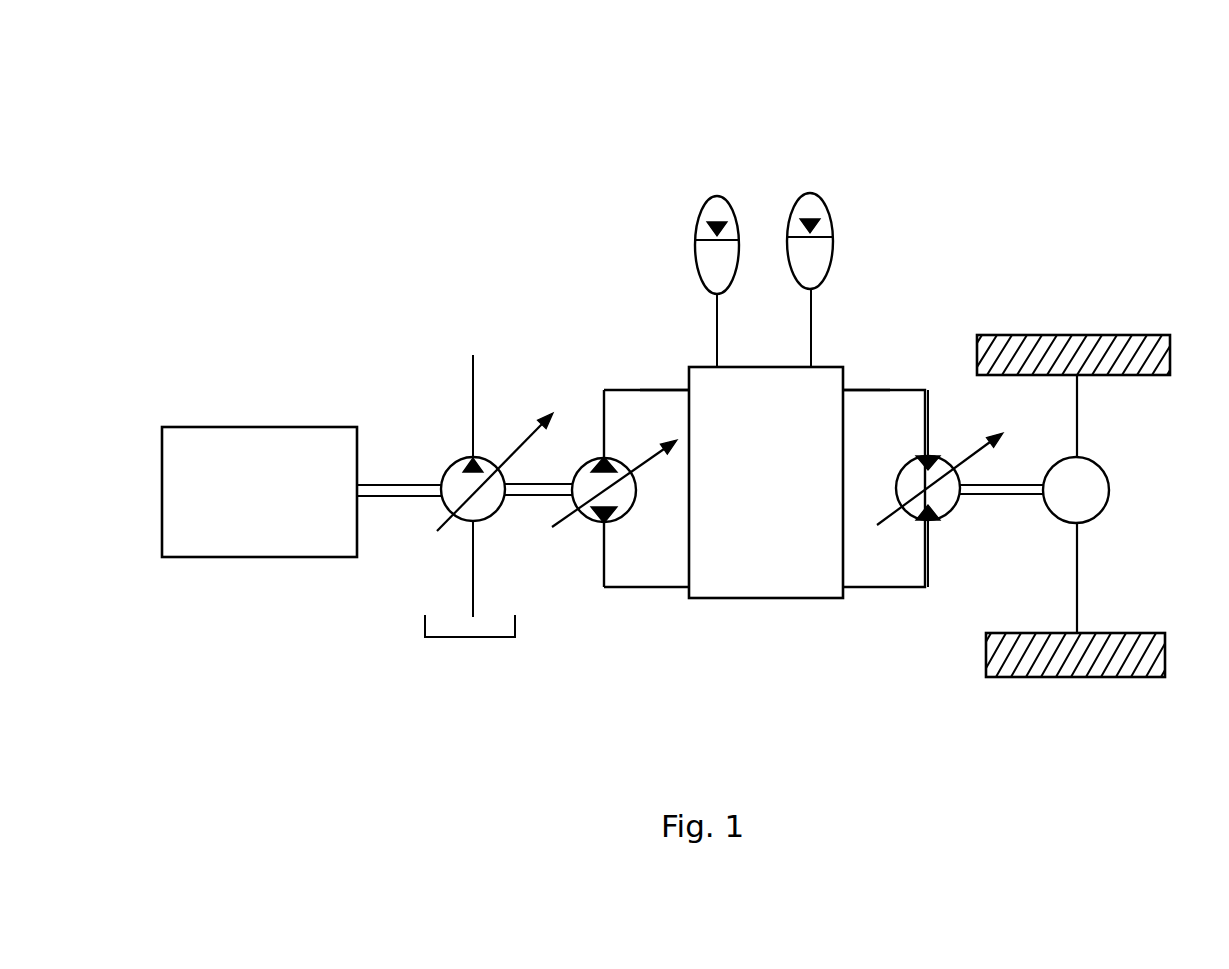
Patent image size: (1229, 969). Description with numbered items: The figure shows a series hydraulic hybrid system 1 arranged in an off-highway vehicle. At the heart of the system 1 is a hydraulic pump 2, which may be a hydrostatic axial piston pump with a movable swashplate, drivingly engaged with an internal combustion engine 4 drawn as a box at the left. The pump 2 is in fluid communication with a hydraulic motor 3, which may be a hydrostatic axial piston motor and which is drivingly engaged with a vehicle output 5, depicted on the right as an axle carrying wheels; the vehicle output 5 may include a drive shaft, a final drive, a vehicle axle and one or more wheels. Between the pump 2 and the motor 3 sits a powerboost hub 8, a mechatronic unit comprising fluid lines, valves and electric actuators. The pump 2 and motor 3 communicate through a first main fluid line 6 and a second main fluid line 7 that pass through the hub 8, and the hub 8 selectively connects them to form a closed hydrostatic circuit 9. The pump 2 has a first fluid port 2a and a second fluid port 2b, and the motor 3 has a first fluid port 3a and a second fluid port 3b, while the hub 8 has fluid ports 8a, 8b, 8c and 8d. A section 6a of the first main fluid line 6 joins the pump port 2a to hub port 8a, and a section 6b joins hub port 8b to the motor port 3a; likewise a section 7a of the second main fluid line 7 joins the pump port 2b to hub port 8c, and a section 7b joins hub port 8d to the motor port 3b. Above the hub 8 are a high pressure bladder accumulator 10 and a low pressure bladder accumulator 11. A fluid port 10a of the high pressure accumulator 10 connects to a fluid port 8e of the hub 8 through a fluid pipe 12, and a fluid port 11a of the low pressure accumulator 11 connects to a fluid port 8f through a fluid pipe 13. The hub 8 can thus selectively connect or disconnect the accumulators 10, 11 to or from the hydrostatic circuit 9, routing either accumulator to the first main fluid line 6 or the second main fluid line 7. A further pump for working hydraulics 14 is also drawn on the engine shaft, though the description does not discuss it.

The series hydraulic hybrid system 1 is at (386, 126).
The hydraulic pump 2 is at (609, 482).
The first fluid port 2a is at (600, 523).
The second fluid port 2b is at (601, 456).
The hydraulic motor 3 is at (938, 488).
The first fluid port 3a is at (925, 518).
The second fluid port 3b is at (924, 457).
The internal combustion engine 4 is at (249, 559).
The vehicle output 5 is at (1124, 535).
The first main fluid line 6 is at (759, 517).
The section of first main fluid line 6a is at (622, 588).
The section of first main fluid line 6b is at (916, 588).
The second main fluid line 7 is at (764, 361).
The section of second main fluid line 7a is at (668, 386).
The section of second main fluid line 7b is at (858, 387).
The powerboost hub 8 is at (766, 600).
The fluid port 8a is at (691, 586).
The fluid port 8b is at (841, 586).
The fluid port 8c is at (692, 391).
The fluid port 8d is at (840, 391).
The fluid port 8e is at (717, 370).
The fluid port 8f is at (810, 370).
The closed hydrostatic circuit 9 is at (874, 323).
The high pressure bladder accumulator 10 is at (695, 215).
The fluid port 10a is at (719, 294).
The low pressure bladder accumulator 11 is at (832, 216).
The fluid port 11a is at (812, 290).
The fluid pipe 12 is at (749, 330).
The fluid pipe 13 is at (844, 325).
The working hydraulics pump 14 is at (468, 522).